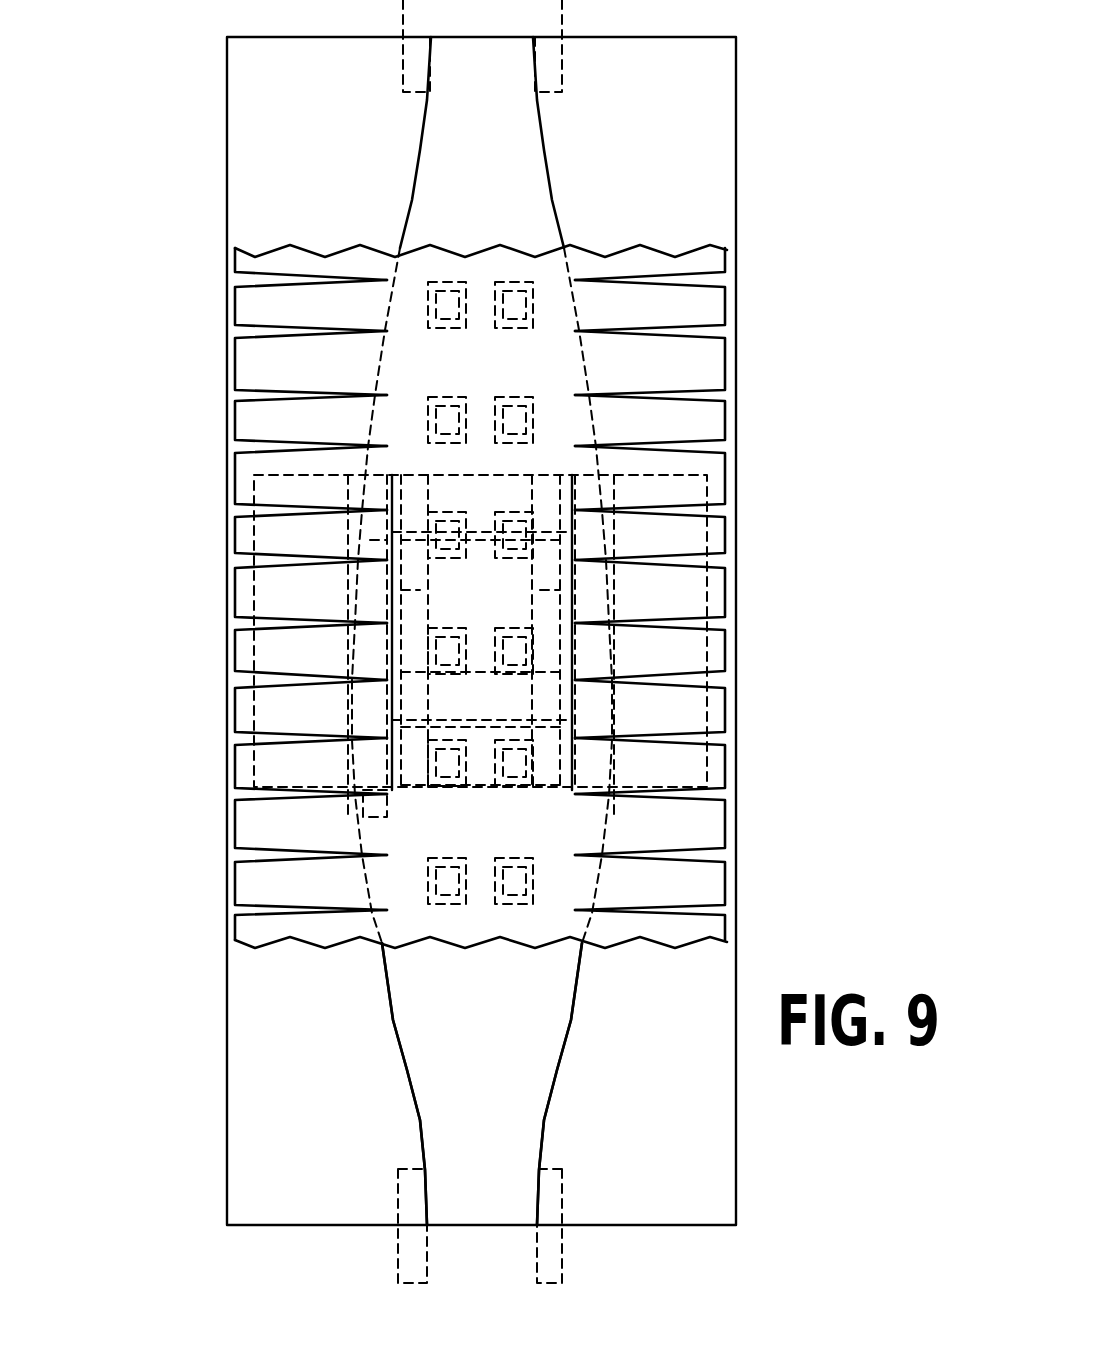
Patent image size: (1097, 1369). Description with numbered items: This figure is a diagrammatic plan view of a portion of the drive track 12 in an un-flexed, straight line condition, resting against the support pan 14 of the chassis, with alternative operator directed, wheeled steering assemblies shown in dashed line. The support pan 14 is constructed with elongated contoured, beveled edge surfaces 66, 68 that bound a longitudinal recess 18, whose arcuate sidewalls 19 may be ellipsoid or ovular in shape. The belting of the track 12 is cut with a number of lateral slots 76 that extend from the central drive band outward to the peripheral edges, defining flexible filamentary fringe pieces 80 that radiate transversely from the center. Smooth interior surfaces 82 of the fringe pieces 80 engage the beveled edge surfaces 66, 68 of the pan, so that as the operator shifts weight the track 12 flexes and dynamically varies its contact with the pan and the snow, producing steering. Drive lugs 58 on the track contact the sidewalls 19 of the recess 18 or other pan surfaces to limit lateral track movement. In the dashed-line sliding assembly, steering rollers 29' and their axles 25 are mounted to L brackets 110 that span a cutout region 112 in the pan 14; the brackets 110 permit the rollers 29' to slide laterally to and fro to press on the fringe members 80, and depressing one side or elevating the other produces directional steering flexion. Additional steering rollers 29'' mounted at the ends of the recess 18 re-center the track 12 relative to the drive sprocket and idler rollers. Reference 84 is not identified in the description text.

The support pan 14 is at (740, 60).
The drive track 12 is at (733, 256).
The slots 76 is at (240, 397).
The fringe pieces 80 is at (238, 548).
The heat sink fins 84 is at (722, 362).
The interior surfaces 82 is at (700, 768).
The contoured edge surface 66 is at (262, 178).
The contoured edge surface 68 is at (614, 1049).
The sidewalls 19 is at (387, 978).
The longitudinal recess 18 is at (418, 1002).
The steering rollers 29'' is at (319, 641).
The steering rollers 29' is at (340, 666).
The cutout region 112 is at (705, 651).
The axles 25 is at (481, 655).
The L brackets 110 is at (383, 816).
The drive lugs 58 is at (500, 393).